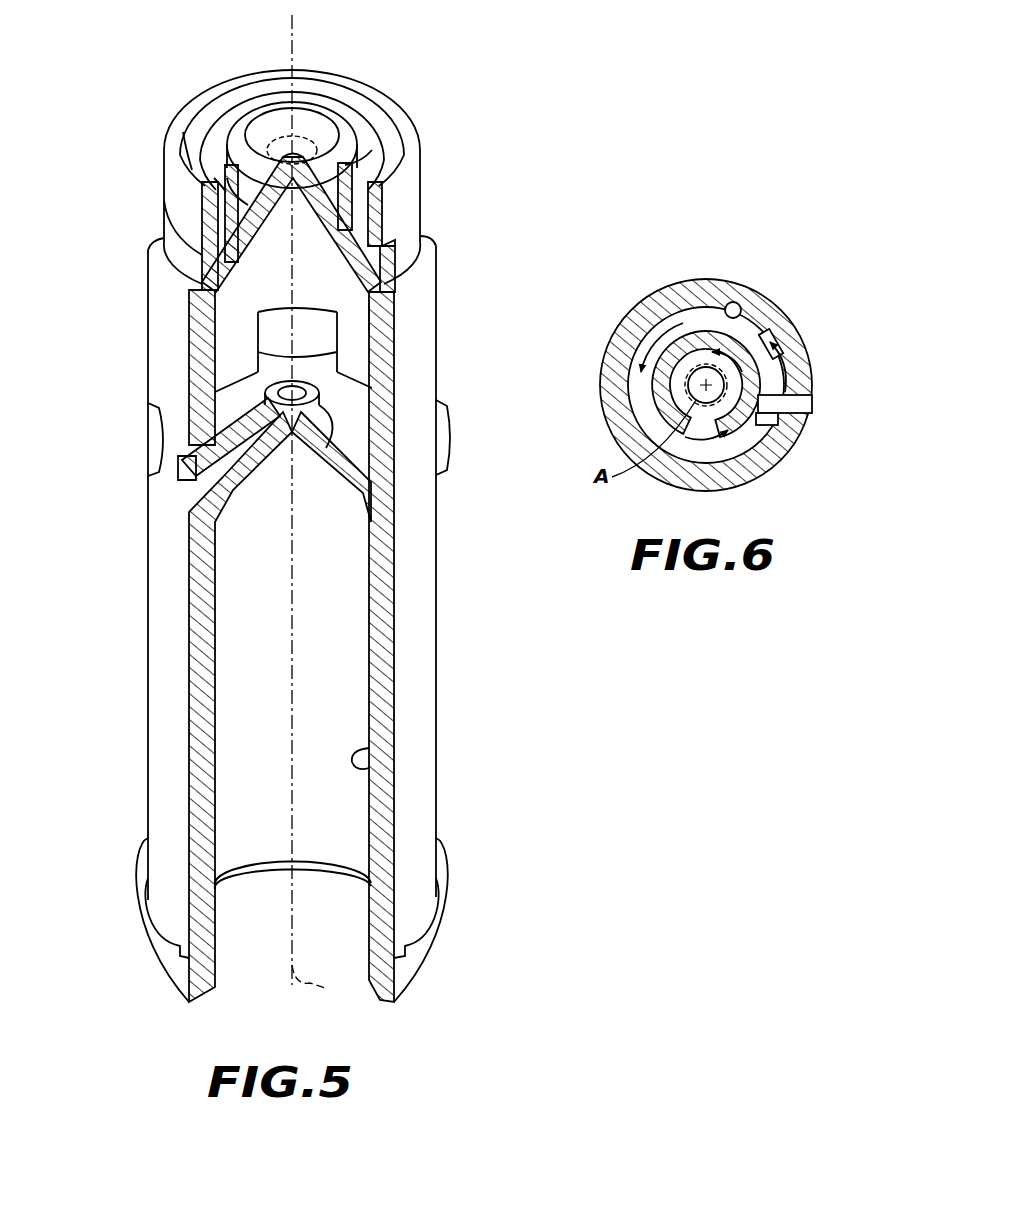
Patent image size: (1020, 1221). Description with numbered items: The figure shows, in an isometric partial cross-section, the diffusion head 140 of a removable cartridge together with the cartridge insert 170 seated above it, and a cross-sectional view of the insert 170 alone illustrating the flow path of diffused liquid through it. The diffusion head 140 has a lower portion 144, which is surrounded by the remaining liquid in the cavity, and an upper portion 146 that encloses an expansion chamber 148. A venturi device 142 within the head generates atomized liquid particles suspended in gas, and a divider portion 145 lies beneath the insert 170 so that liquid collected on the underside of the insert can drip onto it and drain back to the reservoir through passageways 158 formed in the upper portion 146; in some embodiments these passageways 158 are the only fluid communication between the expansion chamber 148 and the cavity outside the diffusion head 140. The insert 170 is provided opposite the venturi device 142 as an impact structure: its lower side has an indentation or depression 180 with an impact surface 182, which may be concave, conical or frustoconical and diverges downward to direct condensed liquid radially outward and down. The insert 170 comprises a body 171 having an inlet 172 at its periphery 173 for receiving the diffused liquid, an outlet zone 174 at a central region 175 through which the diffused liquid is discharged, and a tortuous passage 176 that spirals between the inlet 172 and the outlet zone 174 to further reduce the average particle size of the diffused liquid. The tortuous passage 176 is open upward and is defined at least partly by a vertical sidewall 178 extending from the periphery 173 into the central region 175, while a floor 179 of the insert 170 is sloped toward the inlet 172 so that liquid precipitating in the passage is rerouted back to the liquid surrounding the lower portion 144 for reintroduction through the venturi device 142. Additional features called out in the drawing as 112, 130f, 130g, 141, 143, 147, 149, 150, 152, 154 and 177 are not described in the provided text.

In FIG. 5, the delivery tube 112 is at (250, 992).
In FIG. 6, the slot 130f is at (813, 386).
In FIG. 6, the groove 130g is at (728, 347).
In FIG. 5, the diffusion head 140 is at (490, 282).
In FIG. 5, the inner tube 141 is at (210, 760).
In FIG. 5, the venturi device 142 is at (332, 412).
In FIG. 5, the flange 143 is at (152, 912).
In FIG. 5, the lower portion 144 is at (492, 433).
In FIG. 5, the divider portion 145 is at (345, 452).
In FIG. 5, the upper portion 146 is at (85, 195).
In FIG. 5, the nozzle passage 147 is at (302, 462).
In FIG. 5, the expansion chamber 148 is at (350, 366).
In FIG. 5, the side conduit 149 is at (190, 472).
In FIG. 5, the wall 150 is at (392, 294).
In FIG. 5, the inner chamber 152 is at (360, 736).
In FIG. 5, the port 154 is at (364, 752).
In FIG. 5, the passageways 158 is at (268, 326).
In FIG. 5, the cartridge insert 170 is at (489, 74).
In FIG. 6, the cartridge insert 170 is at (812, 282).
In FIG. 5, the body 171 is at (182, 206).
In FIG. 6, the body 171 is at (624, 385).
In FIG. 5, the inlet 172 is at (404, 246).
In FIG. 6, the inlet 172 is at (806, 376).
In FIG. 5, the periphery 173 is at (424, 210).
In FIG. 6, the periphery 173 is at (800, 346).
In FIG. 5, the outlet zone 174 is at (305, 135).
In FIG. 6, the outlet zone 174 is at (690, 385).
In FIG. 5, the central region 175 is at (352, 116).
In FIG. 6, the central region 175 is at (662, 422).
In FIG. 5, the tortuous passage 176 is at (262, 94).
In FIG. 6, the tortuous passage 176 is at (776, 336).
In FIG. 5, the outer groove 177 is at (176, 140).
In FIG. 5, the vertical sidewall 178 is at (374, 136).
In FIG. 6, the vertical sidewall 178 is at (735, 302).
In FIG. 5, the floor 179 is at (214, 186).
In FIG. 6, the floor 179 is at (760, 436).
In FIG. 5, the indentation or depression 180 is at (270, 262).
In FIG. 5, the impact surface 182 is at (312, 262).